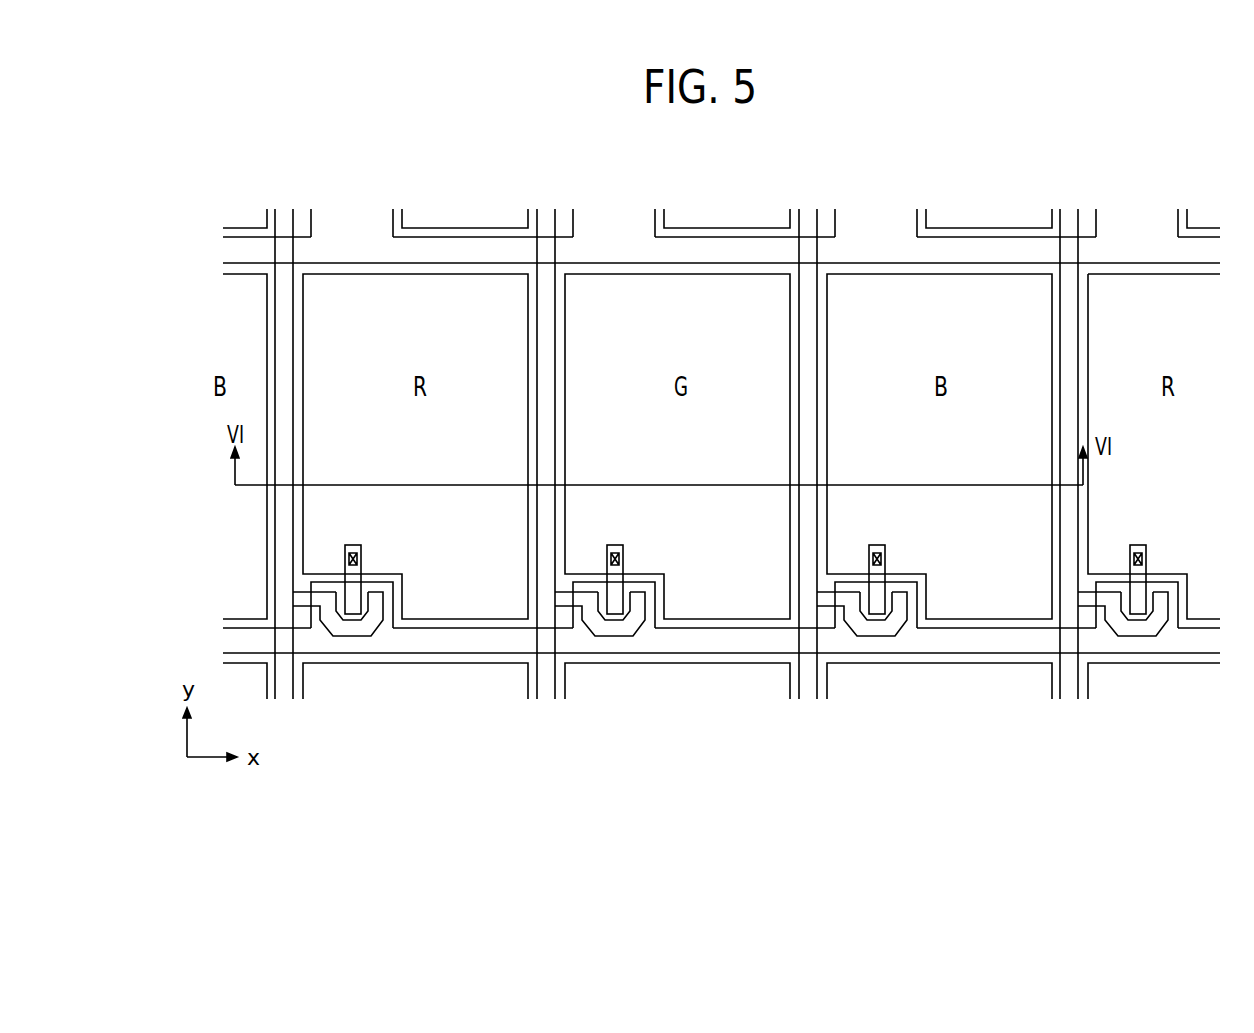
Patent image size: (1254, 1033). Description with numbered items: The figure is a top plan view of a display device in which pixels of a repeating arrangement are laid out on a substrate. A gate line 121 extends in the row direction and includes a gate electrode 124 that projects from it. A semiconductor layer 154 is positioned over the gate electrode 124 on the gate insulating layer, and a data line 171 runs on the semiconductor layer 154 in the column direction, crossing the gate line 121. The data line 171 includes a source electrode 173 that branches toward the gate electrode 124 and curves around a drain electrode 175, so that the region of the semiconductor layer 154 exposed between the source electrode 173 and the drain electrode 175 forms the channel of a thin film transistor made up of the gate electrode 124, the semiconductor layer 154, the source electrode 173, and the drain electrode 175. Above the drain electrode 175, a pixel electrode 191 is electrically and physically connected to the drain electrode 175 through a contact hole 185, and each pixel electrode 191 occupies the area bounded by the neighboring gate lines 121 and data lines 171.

The gate line 121 is at (457, 628).
The gate electrode 124 is at (395, 605).
The semiconductor layer 154 is at (367, 592).
The data line 171 is at (276, 395).
The source electrode 173 is at (353, 636).
The drain electrode 175 is at (362, 565).
The contact hole 185 is at (357, 555).
The pixel electrode 191 is at (304, 338).